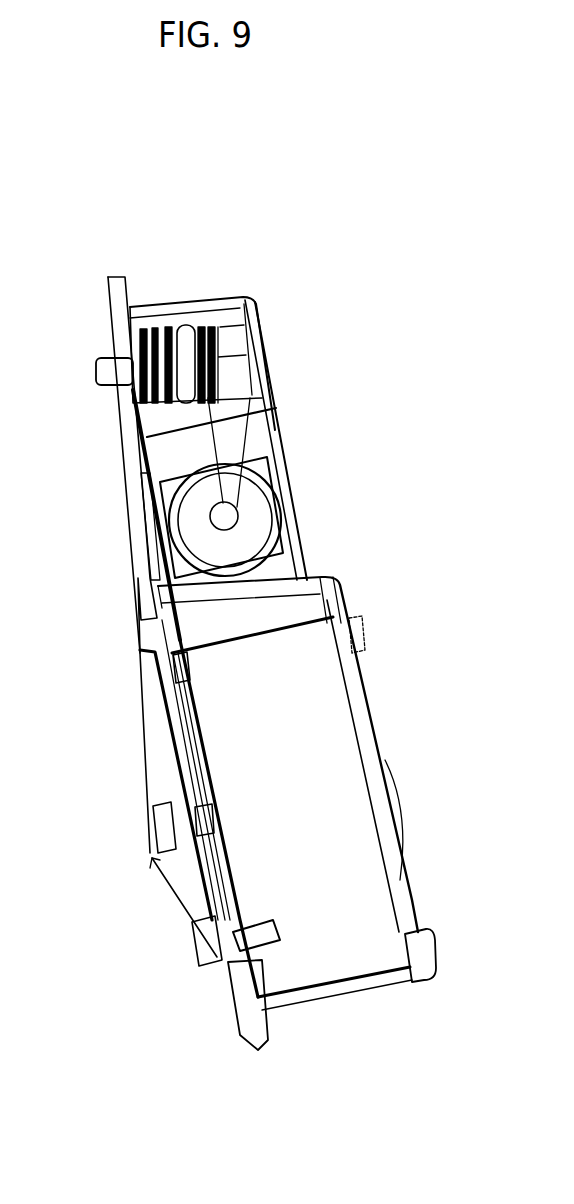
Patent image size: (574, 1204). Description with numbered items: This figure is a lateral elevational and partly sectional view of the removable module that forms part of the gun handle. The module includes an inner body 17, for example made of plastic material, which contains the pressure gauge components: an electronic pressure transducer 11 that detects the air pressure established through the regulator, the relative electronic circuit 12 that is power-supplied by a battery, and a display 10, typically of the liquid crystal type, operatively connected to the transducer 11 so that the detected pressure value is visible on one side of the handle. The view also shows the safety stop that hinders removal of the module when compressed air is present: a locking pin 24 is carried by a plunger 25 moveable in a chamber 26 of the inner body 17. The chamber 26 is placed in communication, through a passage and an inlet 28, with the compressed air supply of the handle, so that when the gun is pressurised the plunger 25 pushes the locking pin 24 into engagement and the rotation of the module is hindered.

The display 10 is at (328, 707).
The transducer 11 is at (262, 530).
The electronic circuit 12 is at (308, 600).
The inner body 17 is at (387, 318).
The locking pin 24 is at (95, 368).
The plunger 25 is at (188, 332).
The chamber 26 is at (240, 340).
The inlet 28 is at (152, 526).